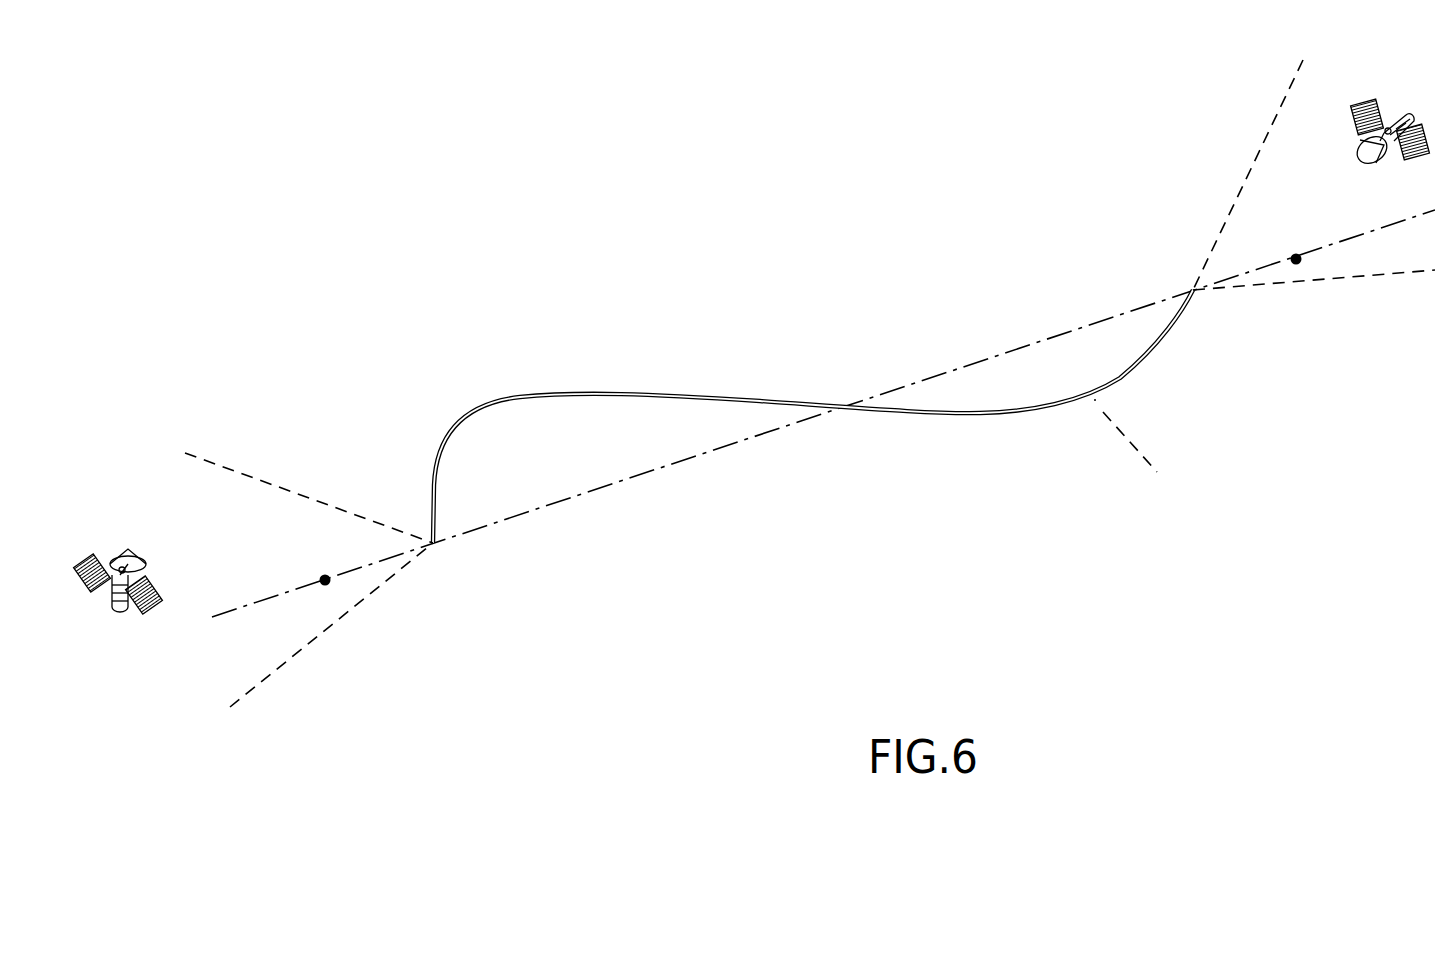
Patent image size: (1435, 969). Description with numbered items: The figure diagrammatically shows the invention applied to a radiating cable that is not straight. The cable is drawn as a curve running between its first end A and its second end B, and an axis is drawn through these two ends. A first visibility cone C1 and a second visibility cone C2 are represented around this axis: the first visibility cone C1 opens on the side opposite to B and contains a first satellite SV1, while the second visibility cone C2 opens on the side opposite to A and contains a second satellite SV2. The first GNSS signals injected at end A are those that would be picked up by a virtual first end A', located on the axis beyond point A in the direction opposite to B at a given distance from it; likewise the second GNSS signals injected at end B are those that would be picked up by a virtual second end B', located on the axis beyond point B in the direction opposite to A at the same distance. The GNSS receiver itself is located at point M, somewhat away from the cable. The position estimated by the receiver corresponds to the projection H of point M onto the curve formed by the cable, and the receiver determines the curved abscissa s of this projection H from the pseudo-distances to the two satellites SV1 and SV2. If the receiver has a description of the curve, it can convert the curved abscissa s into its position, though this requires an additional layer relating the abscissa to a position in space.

The first end of the cable A is at (309, 498).
The virtual first end of the cable A' is at (314, 563).
The second end of the cable B is at (1314, 305).
The virtual second end of the cable B' is at (1309, 268).
The first visibility cone C1 is at (331, 641).
The second visibility cone C2 is at (1248, 175).
The projection of the receiver point onto the cable curve H is at (1087, 387).
The curved abscissa of H s is at (813, 416).
The point at which the GNSS receiver is located M is at (1144, 468).
The first satellite SV1 is at (118, 611).
The second satellite SV2 is at (1390, 111).